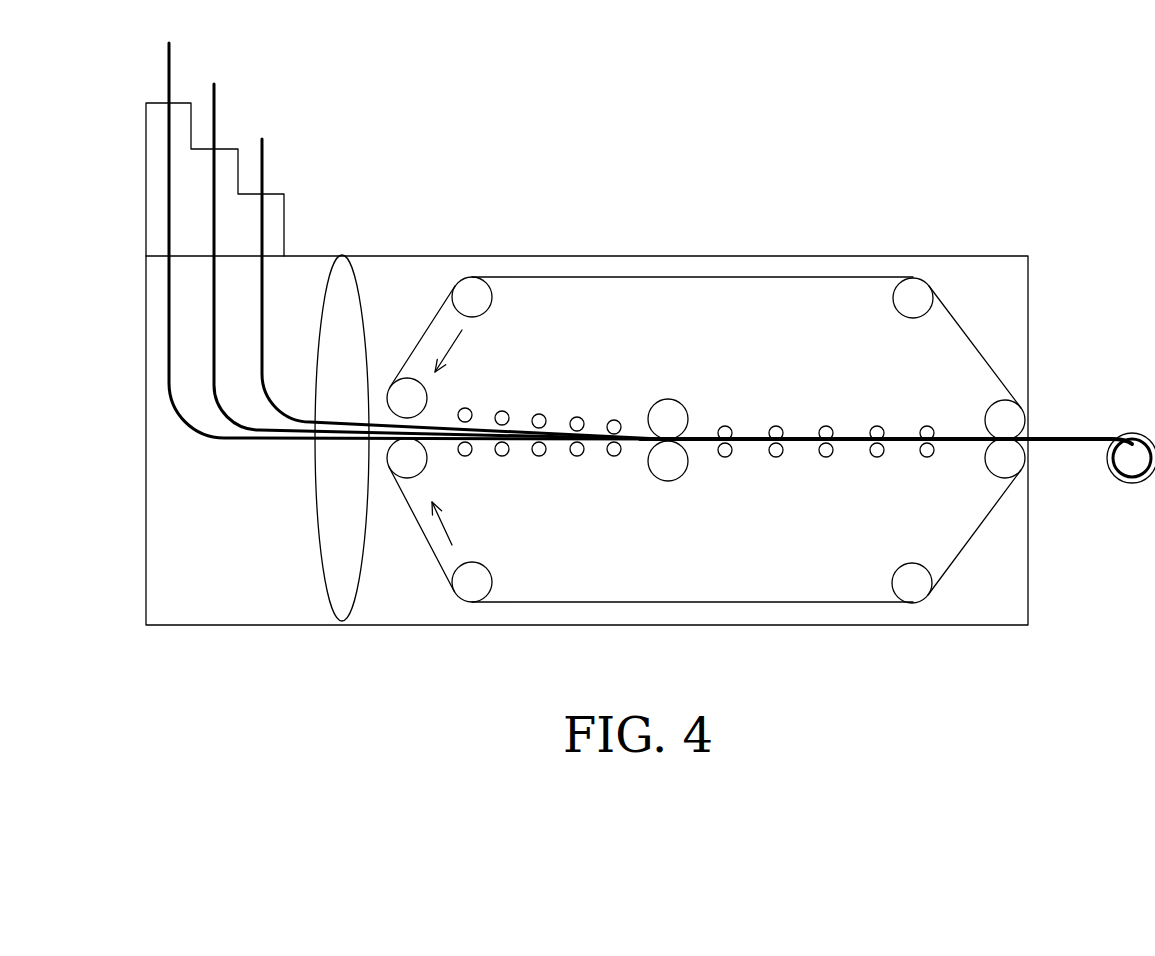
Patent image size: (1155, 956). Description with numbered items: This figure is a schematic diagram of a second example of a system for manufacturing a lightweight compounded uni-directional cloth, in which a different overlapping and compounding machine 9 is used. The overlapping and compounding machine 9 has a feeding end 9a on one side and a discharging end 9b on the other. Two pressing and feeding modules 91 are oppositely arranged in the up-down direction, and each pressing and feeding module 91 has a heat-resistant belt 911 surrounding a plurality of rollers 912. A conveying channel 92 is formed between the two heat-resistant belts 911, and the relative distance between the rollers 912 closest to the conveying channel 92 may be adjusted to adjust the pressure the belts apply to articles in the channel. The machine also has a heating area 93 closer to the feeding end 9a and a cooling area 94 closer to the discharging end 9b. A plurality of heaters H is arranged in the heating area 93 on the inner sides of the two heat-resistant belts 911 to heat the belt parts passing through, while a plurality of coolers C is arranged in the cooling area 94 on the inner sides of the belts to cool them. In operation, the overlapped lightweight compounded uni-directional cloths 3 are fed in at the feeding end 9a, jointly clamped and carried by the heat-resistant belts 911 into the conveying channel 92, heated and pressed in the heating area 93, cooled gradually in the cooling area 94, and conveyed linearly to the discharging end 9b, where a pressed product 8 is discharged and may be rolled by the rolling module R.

The lightweight compounded uni-directional cloth 3 is at (171, 53).
The overlapping and compounding machine 9 is at (449, 188).
The feeding end 9a is at (295, 383).
The discharging end 9b is at (1058, 415).
The pressing and feeding module 91 is at (705, 432).
The heat-resistant belt 911 is at (592, 276).
The roller 912 is at (410, 380).
The conveying channel 92 is at (560, 472).
The heating area 93 is at (533, 385).
The cooling area 94 is at (823, 395).
The heater H is at (612, 413).
The cooler C is at (776, 425).
The pressed product 8 is at (1080, 462).
The rolling module R is at (1132, 475).